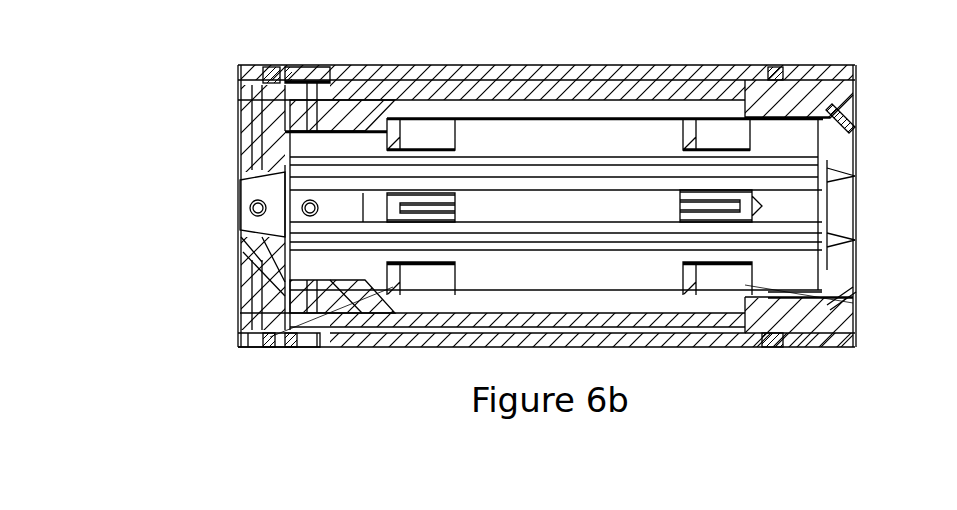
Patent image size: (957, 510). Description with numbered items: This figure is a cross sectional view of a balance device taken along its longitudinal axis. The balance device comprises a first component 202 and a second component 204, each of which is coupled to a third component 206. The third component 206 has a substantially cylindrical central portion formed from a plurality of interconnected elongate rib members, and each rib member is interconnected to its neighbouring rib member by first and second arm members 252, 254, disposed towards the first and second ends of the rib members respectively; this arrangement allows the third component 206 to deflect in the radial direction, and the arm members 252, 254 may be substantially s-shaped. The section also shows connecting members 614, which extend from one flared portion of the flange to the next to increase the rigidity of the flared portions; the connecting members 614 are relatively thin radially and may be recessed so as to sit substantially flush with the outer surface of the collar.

The first component 202 is at (238, 101).
The second component 204 is at (855, 72).
The third component 206 is at (822, 148).
The first arm member 252 is at (853, 300).
The second arm member 254 is at (266, 347).
The connecting member 614 is at (778, 67).